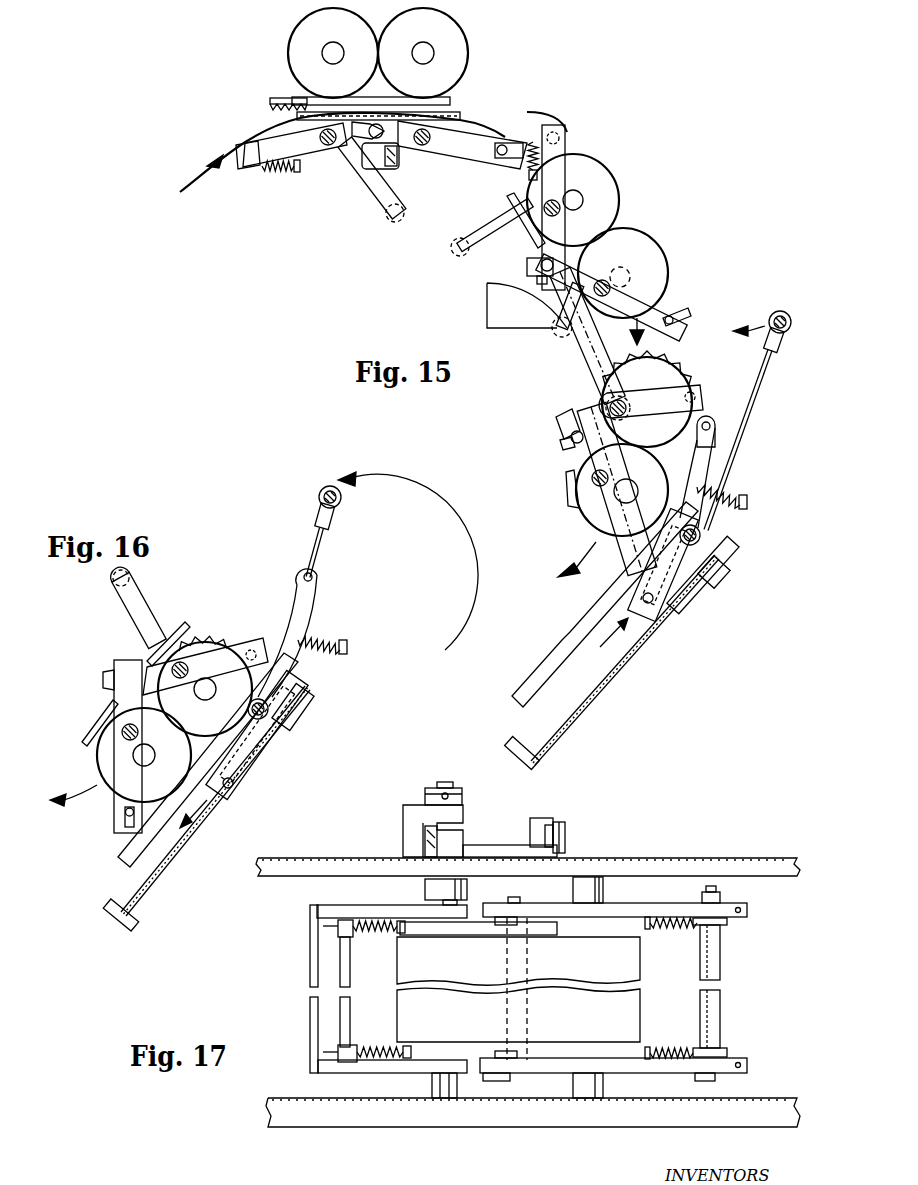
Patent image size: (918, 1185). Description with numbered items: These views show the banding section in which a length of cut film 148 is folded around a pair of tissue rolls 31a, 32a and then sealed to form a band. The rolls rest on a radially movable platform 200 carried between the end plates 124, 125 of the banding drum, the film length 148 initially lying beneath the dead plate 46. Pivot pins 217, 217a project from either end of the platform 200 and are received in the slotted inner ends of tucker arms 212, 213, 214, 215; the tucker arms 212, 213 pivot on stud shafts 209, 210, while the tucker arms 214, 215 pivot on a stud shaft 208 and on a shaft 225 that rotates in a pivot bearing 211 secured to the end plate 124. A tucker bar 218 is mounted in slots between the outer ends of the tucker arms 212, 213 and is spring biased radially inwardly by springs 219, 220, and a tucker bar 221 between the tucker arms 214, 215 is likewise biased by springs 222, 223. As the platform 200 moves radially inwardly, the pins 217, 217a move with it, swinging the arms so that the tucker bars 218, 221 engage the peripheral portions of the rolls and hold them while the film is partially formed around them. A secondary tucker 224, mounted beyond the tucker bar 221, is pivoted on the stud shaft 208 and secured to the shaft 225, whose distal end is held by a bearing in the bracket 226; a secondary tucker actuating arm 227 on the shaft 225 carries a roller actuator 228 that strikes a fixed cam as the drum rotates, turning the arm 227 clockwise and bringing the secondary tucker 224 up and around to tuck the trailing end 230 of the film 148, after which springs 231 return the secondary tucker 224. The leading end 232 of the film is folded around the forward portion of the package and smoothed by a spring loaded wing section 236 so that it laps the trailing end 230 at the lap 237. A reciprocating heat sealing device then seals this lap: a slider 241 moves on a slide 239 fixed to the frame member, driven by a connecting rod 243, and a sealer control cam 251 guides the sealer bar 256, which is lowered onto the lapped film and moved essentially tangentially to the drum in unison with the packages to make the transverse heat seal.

In FIG. 15, the sheet feed roll 31a is at (298, 27).
In FIG. 16, the sheet feed roll 31a is at (215, 721).
In FIG. 15, the sheet feed roll 32a is at (462, 30).
In FIG. 16, the sheet feed roll 32a is at (178, 745).
In FIG. 15, the dead plate 46 is at (285, 97).
In FIG. 17, the end plate 124 is at (322, 868).
In FIG. 17, the end plate 125 is at (322, 1106).
In FIG. 15, the length of cut film 148 is at (516, 112).
In FIG. 15, the platform 200 is at (262, 124).
In FIG. 17, the platform 200 is at (601, 1021).
In FIG. 17, the stud shaft 208 is at (432, 1086).
In FIG. 17, the stud shaft 209 is at (585, 1100).
In FIG. 17, the stud shaft 210 is at (603, 889).
In FIG. 17, the pivot bearing 211 is at (425, 880).
In FIG. 15, the tucker arm 212 is at (448, 152).
In FIG. 17, the tucker arm 212 is at (640, 1076).
In FIG. 17, the tucker arm 213 is at (730, 902).
In FIG. 15, the tucker arm 214 is at (330, 150).
In FIG. 17, the tucker arm 214 is at (492, 1042).
In FIG. 17, the tucker arm 215 is at (476, 937).
In FIG. 15, the pivot pin 217 is at (423, 145).
In FIG. 17, the pivot pin 217 is at (510, 1086).
In FIG. 17, the pivot pin 217a is at (508, 898).
In FIG. 15, the tucker bar 218 is at (676, 308).
In FIG. 17, the tucker bar 218 is at (715, 958).
In FIG. 17, the spring 219 is at (685, 930).
In FIG. 17, the spring 220 is at (650, 1048).
In FIG. 17, the tucker bar 221 is at (340, 1008).
In FIG. 17, the spring 222 is at (400, 1045).
In FIG. 17, the spring 223 is at (375, 935).
In FIG. 15, the secondary tucker 224 is at (248, 175).
In FIG. 17, the secondary tucker 224 is at (310, 952).
In FIG. 17, the shaft 225 is at (425, 899).
In FIG. 17, the bracket 226 is at (415, 805).
In FIG. 15, the secondary tucker actuating arm 227 is at (360, 180).
In FIG. 17, the secondary tucker actuating arm 227 is at (478, 846).
In FIG. 15, the roller actuator 228 is at (555, 335).
In FIG. 17, the roller actuator 228 is at (565, 835).
In FIG. 15, the trailing end 230 is at (205, 188).
In FIG. 15, the springs 231 is at (562, 150).
In FIG. 16, the springs 231 is at (240, 632).
In FIG. 15, the leading end 232 is at (698, 335).
In FIG. 15, the wing section 236 is at (700, 478).
In FIG. 16, the wing section 236 is at (300, 608).
In FIG. 15, the lap 237 is at (714, 436).
In FIG. 15, the slide 239 is at (606, 684).
In FIG. 16, the slide 239 is at (160, 876).
In FIG. 15, the slider 241 is at (690, 596).
In FIG. 16, the slider 241 is at (268, 776).
In FIG. 15, the connecting rod 243 is at (745, 418).
In FIG. 16, the connecting rod 243 is at (320, 550).
In FIG. 15, the sealer control cam 251 is at (556, 654).
In FIG. 16, the sealer control cam 251 is at (115, 852).
In FIG. 15, the sealer bar 256 is at (720, 528).
In FIG. 16, the sealer bar 256 is at (290, 690).